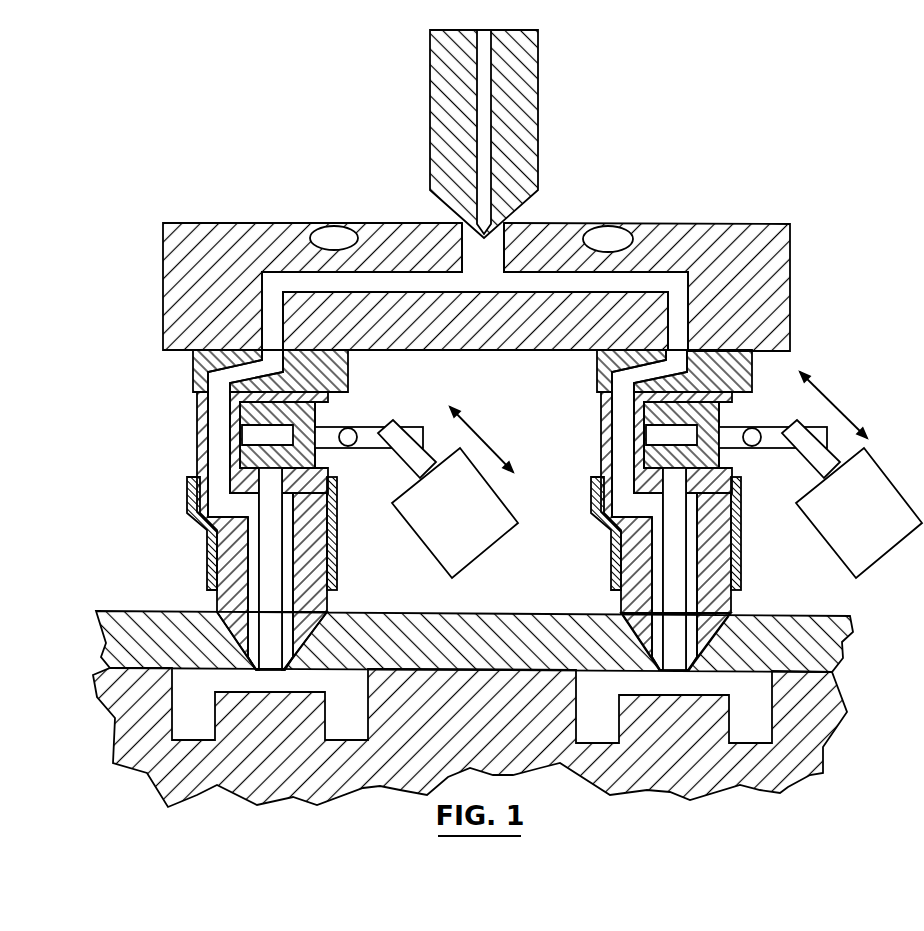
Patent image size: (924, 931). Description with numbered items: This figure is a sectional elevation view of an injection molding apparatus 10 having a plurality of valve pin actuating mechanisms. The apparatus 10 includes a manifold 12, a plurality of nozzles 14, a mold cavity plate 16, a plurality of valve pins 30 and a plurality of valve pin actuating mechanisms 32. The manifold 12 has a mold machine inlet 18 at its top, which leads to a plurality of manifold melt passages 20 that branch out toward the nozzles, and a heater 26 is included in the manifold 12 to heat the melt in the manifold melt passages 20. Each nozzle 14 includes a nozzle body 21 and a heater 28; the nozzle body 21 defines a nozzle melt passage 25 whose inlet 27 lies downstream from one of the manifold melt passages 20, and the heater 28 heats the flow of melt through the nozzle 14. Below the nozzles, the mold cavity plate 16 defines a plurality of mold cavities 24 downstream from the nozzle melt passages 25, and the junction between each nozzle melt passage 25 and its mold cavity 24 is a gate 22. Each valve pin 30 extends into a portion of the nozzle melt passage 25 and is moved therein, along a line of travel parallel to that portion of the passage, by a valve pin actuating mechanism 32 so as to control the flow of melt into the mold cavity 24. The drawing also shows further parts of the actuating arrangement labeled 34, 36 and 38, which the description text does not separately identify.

The injection molding apparatus 10 is at (507, 418).
The manifold 12 is at (484, 227).
The nozzle 14 is at (515, 480).
The mold cavity plate 16 is at (476, 675).
The mold machine inlet 18 is at (498, 243).
The manifold melt passage 20 is at (268, 283).
The nozzle body 21 is at (210, 607).
The gate 22 is at (270, 672).
The mold cavity 24 is at (190, 678).
The nozzle melt passage 25 is at (222, 462).
The heater 26 is at (338, 236).
The inlet 27 is at (258, 342).
The heater 28 is at (334, 570).
The valve pin 30 is at (270, 597).
The valve pin actuating mechanism 32 is at (330, 412).
The link 34 is at (328, 460).
The actuator arm 36 is at (375, 425).
The actuator 38 is at (415, 517).